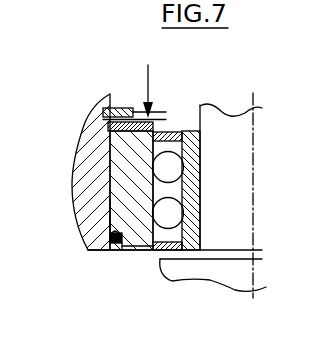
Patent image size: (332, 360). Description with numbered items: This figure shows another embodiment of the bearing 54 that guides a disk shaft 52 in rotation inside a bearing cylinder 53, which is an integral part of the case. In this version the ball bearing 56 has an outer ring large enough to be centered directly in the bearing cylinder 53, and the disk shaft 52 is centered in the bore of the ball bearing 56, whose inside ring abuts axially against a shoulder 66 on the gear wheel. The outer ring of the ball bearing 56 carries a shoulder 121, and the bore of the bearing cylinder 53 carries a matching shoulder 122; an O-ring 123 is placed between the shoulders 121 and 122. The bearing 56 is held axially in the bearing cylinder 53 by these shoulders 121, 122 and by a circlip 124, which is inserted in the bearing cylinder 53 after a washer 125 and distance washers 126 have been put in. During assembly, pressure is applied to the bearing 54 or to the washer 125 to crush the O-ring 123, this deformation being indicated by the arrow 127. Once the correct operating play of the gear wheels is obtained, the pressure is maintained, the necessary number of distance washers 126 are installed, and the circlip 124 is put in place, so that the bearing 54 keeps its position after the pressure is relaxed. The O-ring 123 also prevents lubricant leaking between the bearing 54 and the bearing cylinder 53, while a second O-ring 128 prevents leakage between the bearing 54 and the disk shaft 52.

The disk shaft 52 is at (238, 127).
The bearing cylinder 53 is at (80, 191).
The bearing 54 is at (100, 160).
The ball bearing 56 is at (198, 157).
The shoulder 66 is at (189, 252).
The shoulder 121 is at (107, 213).
The shoulder 122 is at (115, 250).
The O-ring 123 is at (112, 250).
The circlip 124 is at (118, 110).
The washer 125 is at (183, 97).
The distance washers 126 is at (107, 122).
The arrow 127 is at (148, 65).
The O-ring 128 is at (199, 246).